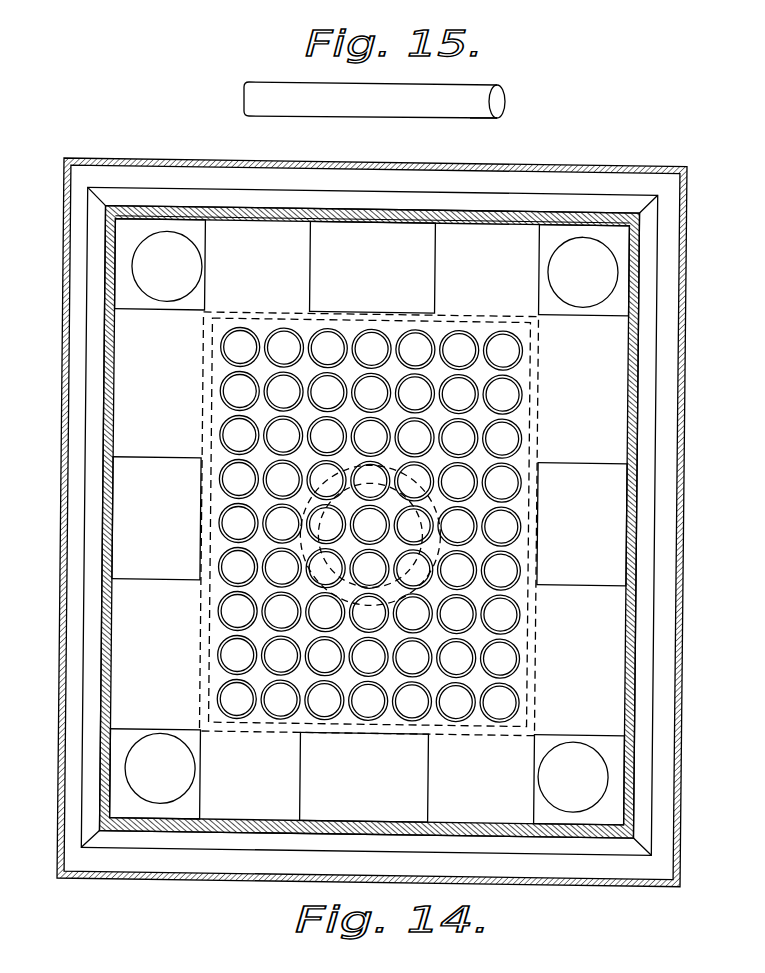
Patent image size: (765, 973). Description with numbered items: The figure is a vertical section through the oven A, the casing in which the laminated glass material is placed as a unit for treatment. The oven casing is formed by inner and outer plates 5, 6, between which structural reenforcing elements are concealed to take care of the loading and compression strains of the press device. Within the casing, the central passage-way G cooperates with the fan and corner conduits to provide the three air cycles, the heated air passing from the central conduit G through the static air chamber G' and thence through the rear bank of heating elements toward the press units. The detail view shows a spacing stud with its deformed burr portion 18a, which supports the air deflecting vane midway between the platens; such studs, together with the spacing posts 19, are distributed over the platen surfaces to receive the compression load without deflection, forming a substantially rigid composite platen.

In FIG. 14, the oven A is at (152, 156).
In FIG. 14, the inner plate 5 is at (216, 162).
In FIG. 14, the outer plate 6 is at (240, 208).
In FIG. 14, the central passage-way G is at (299, 535).
In FIG. 14, the static air chamber G' is at (368, 508).
In FIG. 15, the deformed burr portion 18a is at (372, 80).
In FIG. 15, the spacing post 19 is at (444, 108).